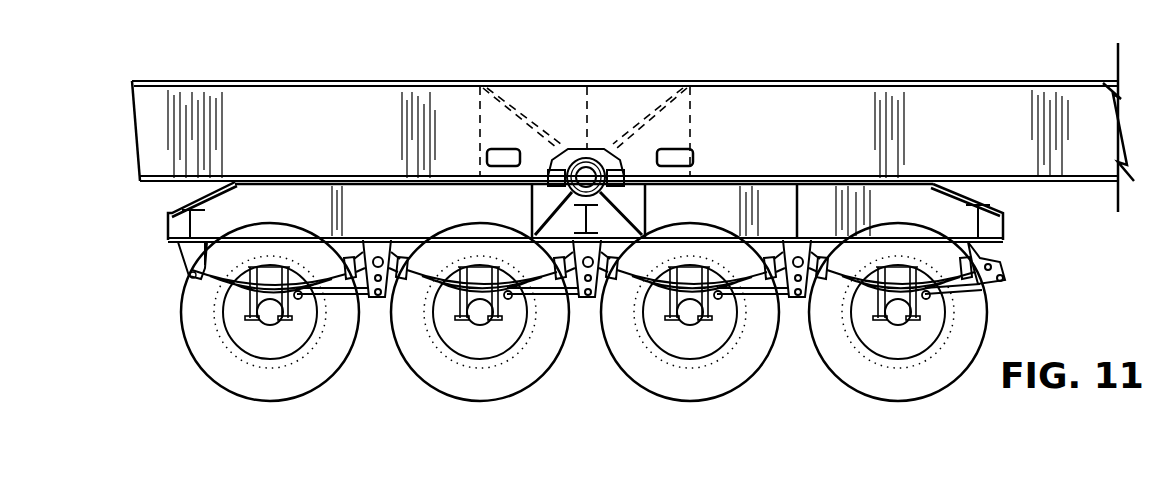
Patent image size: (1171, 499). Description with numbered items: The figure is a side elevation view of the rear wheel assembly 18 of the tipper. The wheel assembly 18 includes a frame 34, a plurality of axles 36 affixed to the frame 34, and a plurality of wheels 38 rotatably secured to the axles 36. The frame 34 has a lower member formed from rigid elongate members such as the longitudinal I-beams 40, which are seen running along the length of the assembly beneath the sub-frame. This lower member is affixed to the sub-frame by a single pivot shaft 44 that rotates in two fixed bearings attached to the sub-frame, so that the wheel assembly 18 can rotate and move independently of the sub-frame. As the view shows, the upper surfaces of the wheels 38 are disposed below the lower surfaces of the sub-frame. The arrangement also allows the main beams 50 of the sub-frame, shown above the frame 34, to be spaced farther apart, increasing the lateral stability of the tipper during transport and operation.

The wheel assembly 18 is at (182, 358).
The frame 34 is at (166, 237).
The axles 36 is at (687, 316).
The wheels 38 is at (417, 368).
The longitudinal I-beams 40 is at (575, 214).
The pivot shaft 44 is at (580, 152).
The main beams 50 is at (197, 100).